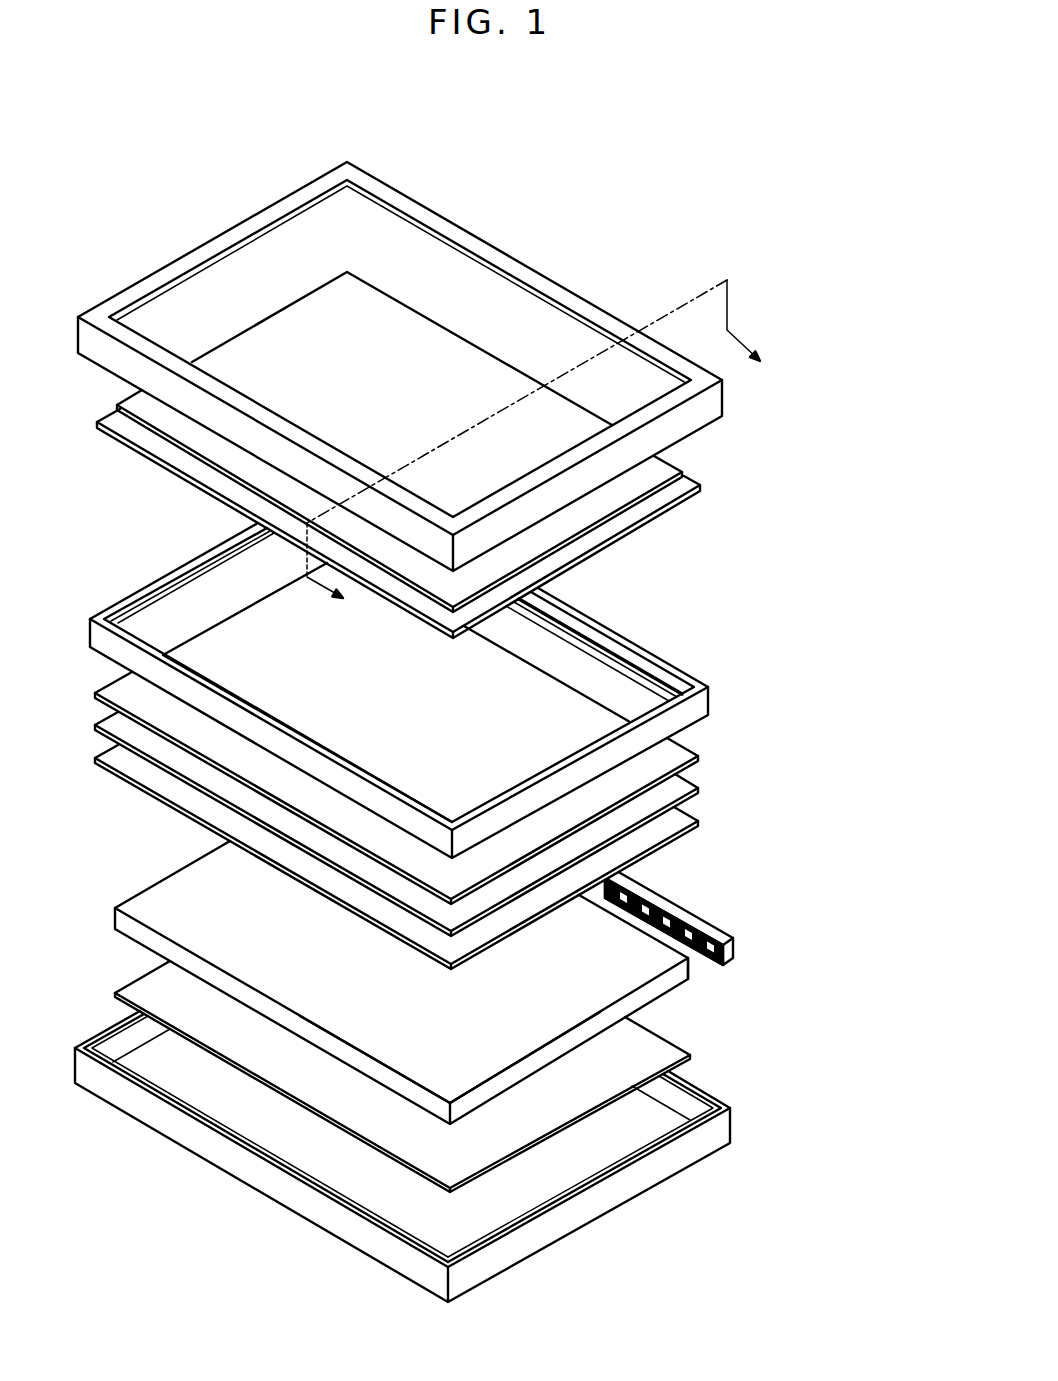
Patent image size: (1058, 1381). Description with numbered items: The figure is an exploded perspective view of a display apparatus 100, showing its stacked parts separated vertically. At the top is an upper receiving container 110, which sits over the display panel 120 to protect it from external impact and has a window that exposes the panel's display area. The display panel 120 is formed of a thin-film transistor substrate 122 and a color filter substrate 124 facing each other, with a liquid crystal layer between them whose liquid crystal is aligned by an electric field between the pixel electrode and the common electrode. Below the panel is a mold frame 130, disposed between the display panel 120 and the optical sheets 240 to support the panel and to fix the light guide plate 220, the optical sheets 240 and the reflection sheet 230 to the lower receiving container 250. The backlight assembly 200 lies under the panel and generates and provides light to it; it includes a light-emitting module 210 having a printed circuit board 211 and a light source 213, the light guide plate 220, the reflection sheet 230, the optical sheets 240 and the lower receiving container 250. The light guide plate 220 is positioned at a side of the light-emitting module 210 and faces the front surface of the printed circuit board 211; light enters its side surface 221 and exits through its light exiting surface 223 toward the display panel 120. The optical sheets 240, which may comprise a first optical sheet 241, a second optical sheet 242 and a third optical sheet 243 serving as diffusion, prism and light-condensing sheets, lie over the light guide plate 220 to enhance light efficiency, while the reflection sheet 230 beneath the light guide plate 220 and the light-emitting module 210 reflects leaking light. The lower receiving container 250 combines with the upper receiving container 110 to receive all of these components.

The display apparatus 100 is at (496, 168).
The upper receiving container 110 is at (722, 399).
The display panel 120 is at (458, 514).
The thin-film transistor substrate 122 is at (655, 512).
The color filter substrate 124 is at (655, 478).
The mold frame 130 is at (730, 675).
The backlight assembly 200 is at (468, 988).
The light-emitting module 210 is at (707, 916).
The printed circuit board 211 is at (735, 948).
The light source 213 is at (687, 923).
The light guide plate 220 is at (413, 1053).
The side surface 221 is at (685, 957).
The light exiting surface 223 is at (528, 1027).
The reflection sheet 230 is at (503, 1133).
The optical sheets 240 is at (459, 820).
The first optical sheet 241 is at (768, 746).
The second optical sheet 242 is at (702, 795).
The third optical sheet 243 is at (702, 759).
The lower receiving container 250 is at (440, 1156).